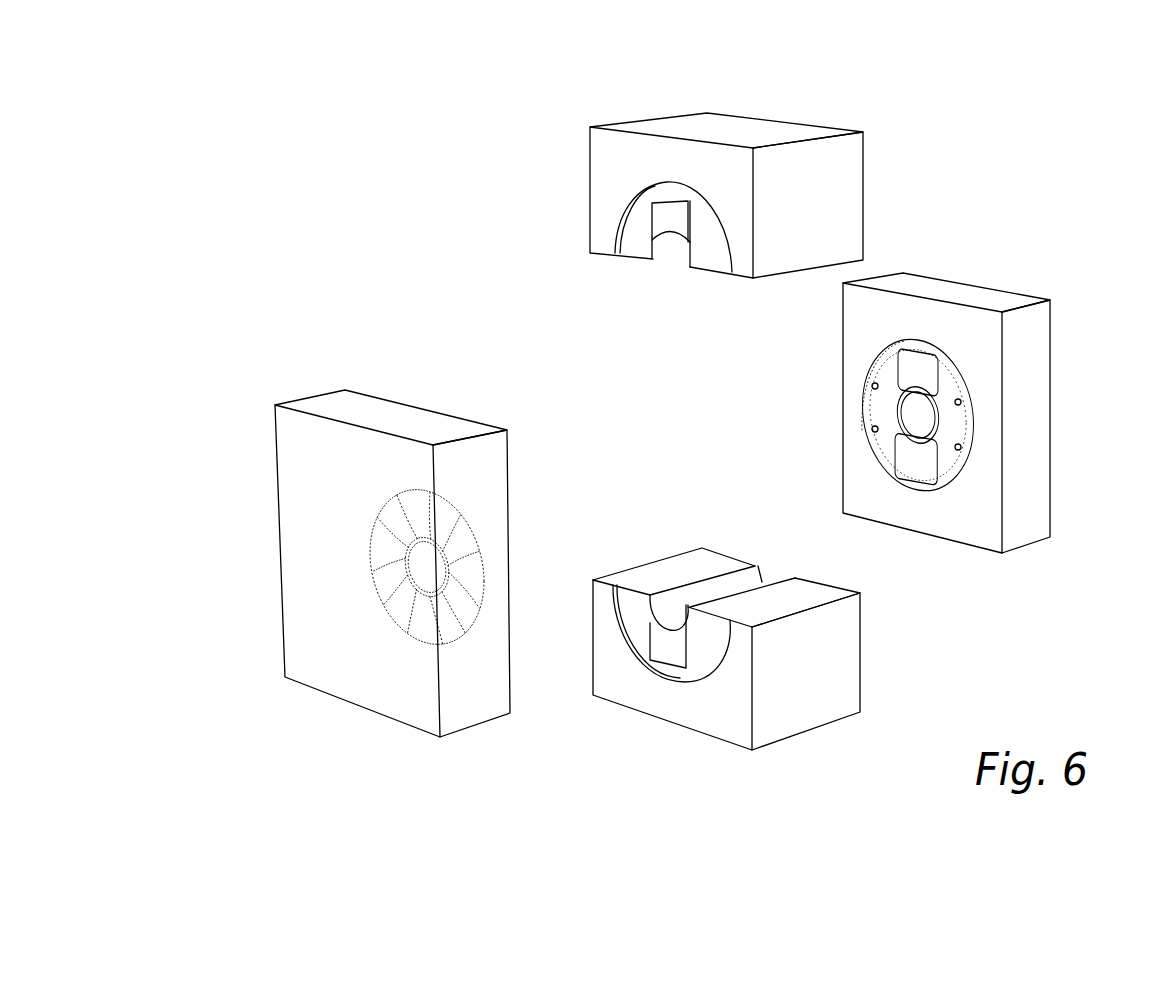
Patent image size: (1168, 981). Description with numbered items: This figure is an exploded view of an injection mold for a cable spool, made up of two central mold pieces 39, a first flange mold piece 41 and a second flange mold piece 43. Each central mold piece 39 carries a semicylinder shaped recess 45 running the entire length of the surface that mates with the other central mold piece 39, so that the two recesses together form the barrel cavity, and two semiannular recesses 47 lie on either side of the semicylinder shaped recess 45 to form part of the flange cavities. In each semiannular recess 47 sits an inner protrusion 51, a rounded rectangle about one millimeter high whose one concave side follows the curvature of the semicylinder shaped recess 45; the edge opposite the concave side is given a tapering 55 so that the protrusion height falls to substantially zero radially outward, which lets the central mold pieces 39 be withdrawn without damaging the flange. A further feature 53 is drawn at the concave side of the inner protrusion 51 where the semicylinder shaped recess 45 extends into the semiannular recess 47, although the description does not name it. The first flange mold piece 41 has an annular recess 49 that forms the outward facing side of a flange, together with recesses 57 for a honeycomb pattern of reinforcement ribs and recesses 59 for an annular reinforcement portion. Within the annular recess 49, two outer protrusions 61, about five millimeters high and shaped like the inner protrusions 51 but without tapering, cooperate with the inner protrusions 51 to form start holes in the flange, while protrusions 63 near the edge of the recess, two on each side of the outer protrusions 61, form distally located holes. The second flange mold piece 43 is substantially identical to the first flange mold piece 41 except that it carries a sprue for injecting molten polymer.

The central mold piece 39 is at (890, 150).
The first flange mold piece 41 is at (1060, 421).
The second flange mold piece 43 is at (262, 548).
The semicylinder shaped recess 45 is at (670, 255).
The semiannular recess 47 is at (712, 257).
The annular recess 49 is at (875, 405).
The inner protrusion 51 is at (660, 220).
The half-round channel 53 is at (668, 237).
The tapering 55 is at (667, 193).
The recesses for forming honeycomb pattern of reinforcement ribs 57 is at (887, 375).
The recesses for forming annular reinforcement portion 59 is at (913, 390).
The outer protrusion 61 is at (917, 468).
The protrusion for forming distally located holes 63 is at (873, 385).